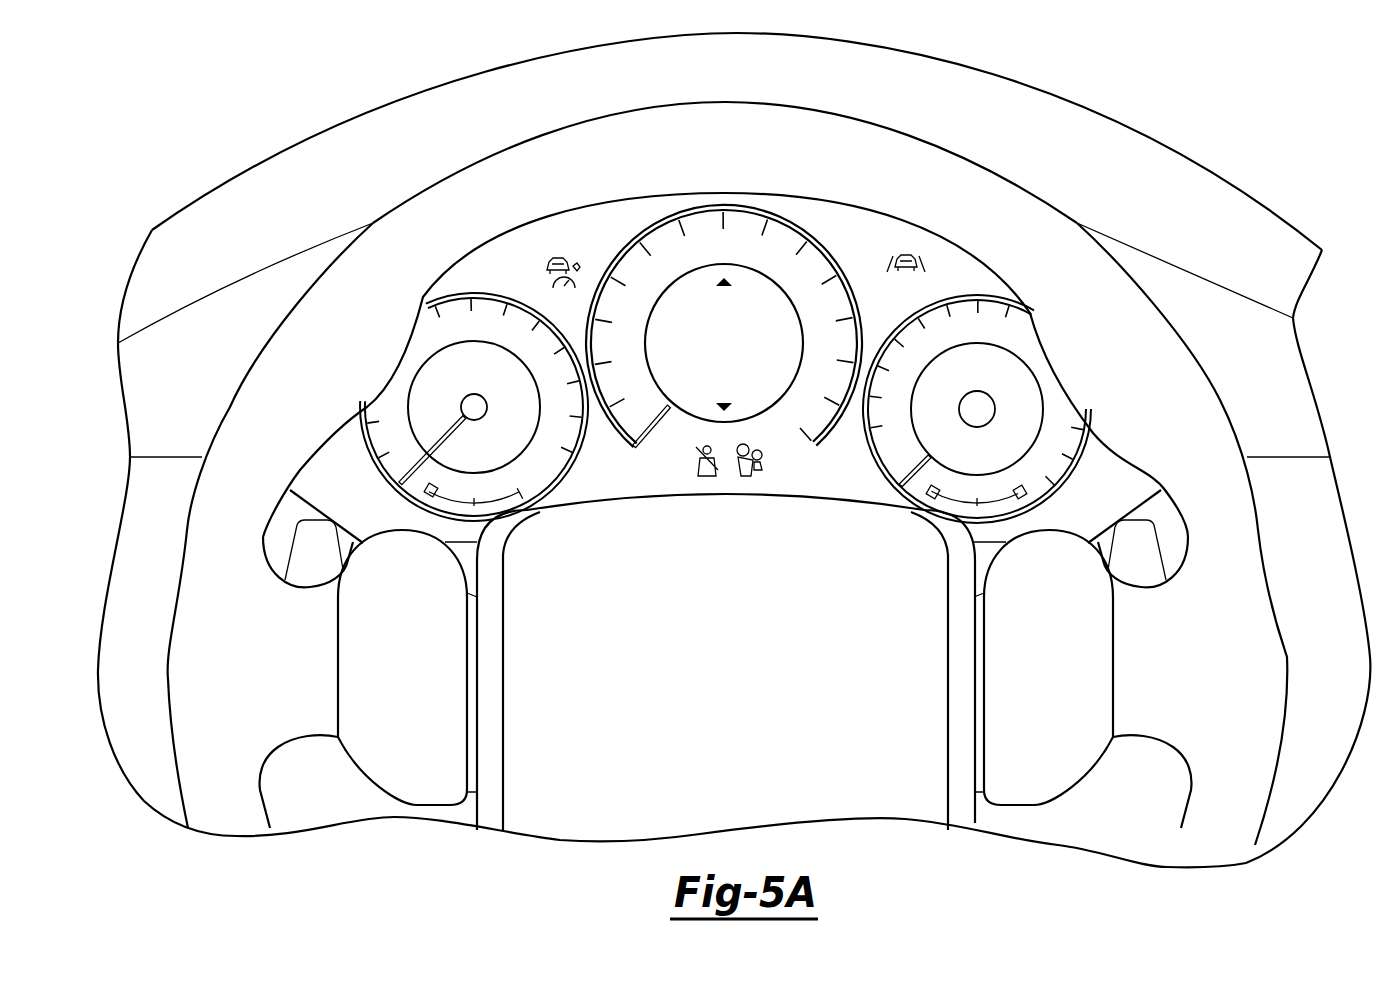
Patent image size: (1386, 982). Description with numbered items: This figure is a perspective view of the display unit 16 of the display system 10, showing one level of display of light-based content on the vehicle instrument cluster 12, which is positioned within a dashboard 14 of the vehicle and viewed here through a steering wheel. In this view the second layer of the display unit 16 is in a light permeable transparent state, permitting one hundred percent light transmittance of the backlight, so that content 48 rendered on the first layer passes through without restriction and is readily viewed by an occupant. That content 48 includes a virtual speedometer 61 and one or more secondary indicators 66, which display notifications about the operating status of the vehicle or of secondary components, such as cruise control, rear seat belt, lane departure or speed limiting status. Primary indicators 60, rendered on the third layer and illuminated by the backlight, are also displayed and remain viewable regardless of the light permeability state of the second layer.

The display system 10 is at (734, 436).
The instrument cluster 12 is at (725, 322).
The dashboard 14 is at (1211, 192).
The display unit 16 is at (756, 256).
The content 48 is at (752, 249).
The primary indicators 60 is at (740, 473).
The virtual speedometer 61 is at (668, 218).
The secondary indicators 66 is at (557, 256).